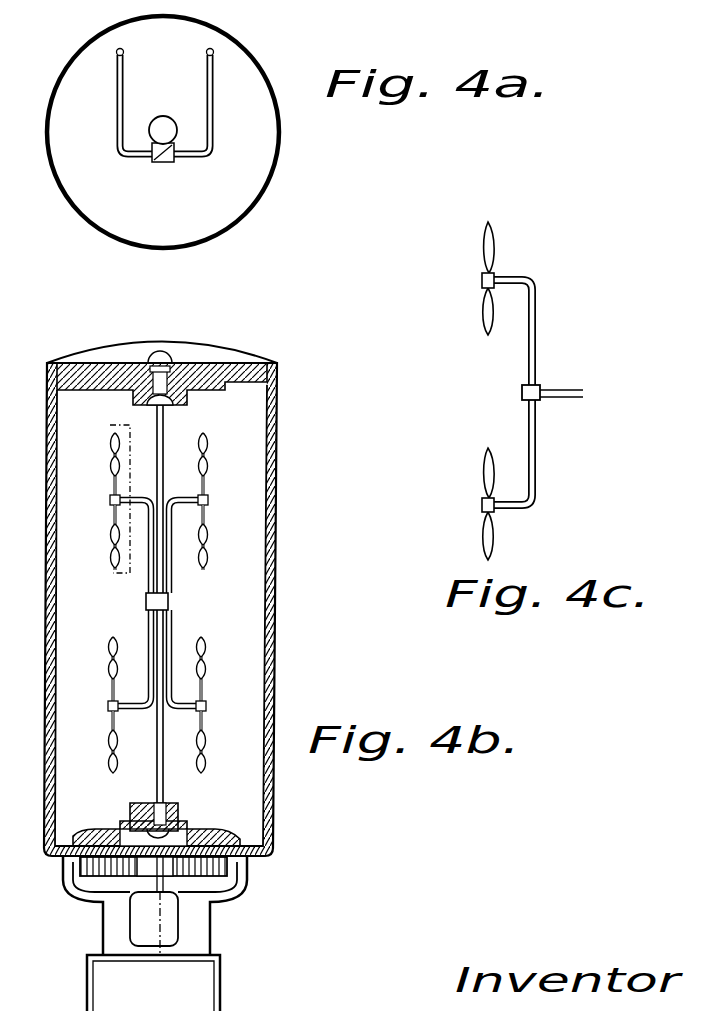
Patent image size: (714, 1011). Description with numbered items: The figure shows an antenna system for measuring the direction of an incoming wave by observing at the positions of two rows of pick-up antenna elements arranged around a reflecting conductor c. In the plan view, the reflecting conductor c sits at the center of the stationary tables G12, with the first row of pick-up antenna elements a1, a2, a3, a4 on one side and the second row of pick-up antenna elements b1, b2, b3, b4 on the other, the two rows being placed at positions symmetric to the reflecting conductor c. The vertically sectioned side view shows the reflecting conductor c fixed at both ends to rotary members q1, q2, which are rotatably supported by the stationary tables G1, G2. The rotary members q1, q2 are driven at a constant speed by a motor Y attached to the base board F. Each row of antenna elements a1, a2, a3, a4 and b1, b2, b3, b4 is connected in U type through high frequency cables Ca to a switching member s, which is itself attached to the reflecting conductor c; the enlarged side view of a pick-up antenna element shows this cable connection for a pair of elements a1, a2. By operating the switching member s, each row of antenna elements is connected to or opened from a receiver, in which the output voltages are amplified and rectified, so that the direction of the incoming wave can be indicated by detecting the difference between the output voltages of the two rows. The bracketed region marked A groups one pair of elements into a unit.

In FIG. 4A, the stationary tables G12 is at (222, 212).
In FIG. 4A, the pick-up antenna element a1 is at (135, 92).
In FIG. 4B, the pick-up antenna element a1 is at (105, 468).
In FIG. 4C, the pick-up antenna element a1 is at (484, 240).
In FIG. 4A, the pick-up antenna element b1 is at (197, 92).
In FIG. 4B, the pick-up antenna element b1 is at (210, 440).
In FIG. 4B, the pick-up antenna element a2 is at (104, 537).
In FIG. 4C, the pick-up antenna element a2 is at (484, 470).
In FIG. 4B, the pick-up antenna element b2 is at (210, 542).
In FIG. 4B, the pick-up antenna element a3 is at (102, 673).
In FIG. 4B, the pick-up antenna element b3 is at (208, 645).
In FIG. 4B, the pick-up antenna element a4 is at (102, 742).
In FIG. 4B, the pick-up antenna element b4 is at (208, 742).
In FIG. 4A, the reflecting conductor c is at (170, 134).
In FIG. 4B, the reflecting conductor c is at (166, 604).
In FIG. 4B, the high frequency cables Ca is at (168, 562).
In FIG. 4C, the high frequency cables Ca is at (538, 357).
In FIG. 4A, the switching member s is at (157, 163).
In FIG. 4B, the switching member s is at (170, 601).
In FIG. 4B, the stationary table G1 is at (215, 370).
In FIG. 4B, the stationary table G2 is at (240, 846).
In FIG. 4B, the rotary member q1 is at (178, 366).
In FIG. 4B, the rotary member q2 is at (178, 817).
In FIG. 4B, the propeller unit A is at (111, 491).
In FIG. 4B, the motor Y is at (155, 906).
In FIG. 4B, the base board F is at (153, 983).